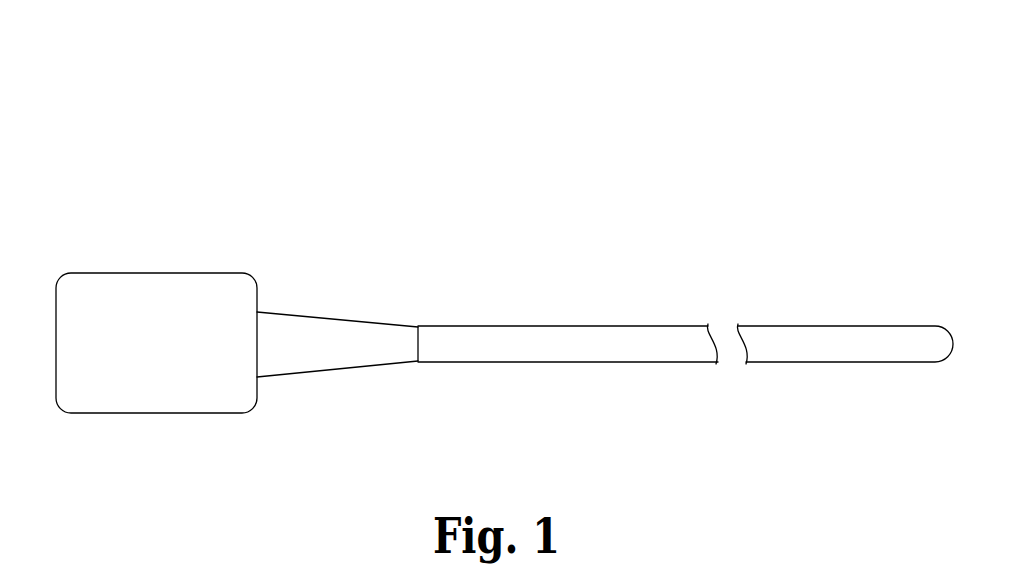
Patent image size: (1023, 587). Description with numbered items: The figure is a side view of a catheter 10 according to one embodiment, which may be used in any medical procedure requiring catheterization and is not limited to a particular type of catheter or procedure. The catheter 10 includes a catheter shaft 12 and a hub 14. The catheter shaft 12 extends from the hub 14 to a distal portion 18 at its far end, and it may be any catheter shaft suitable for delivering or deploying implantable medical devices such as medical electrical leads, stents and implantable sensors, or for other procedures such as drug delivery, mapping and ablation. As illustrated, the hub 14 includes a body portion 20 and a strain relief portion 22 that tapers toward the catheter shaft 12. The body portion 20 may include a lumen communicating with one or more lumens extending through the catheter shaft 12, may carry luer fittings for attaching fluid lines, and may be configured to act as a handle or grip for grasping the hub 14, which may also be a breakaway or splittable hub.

The catheter 10 is at (524, 281).
The catheter shaft 12 is at (617, 335).
The hub 14 is at (185, 227).
The distal portion 18 is at (905, 302).
The body portion 20 is at (138, 382).
The strain relief portion 22 is at (332, 350).